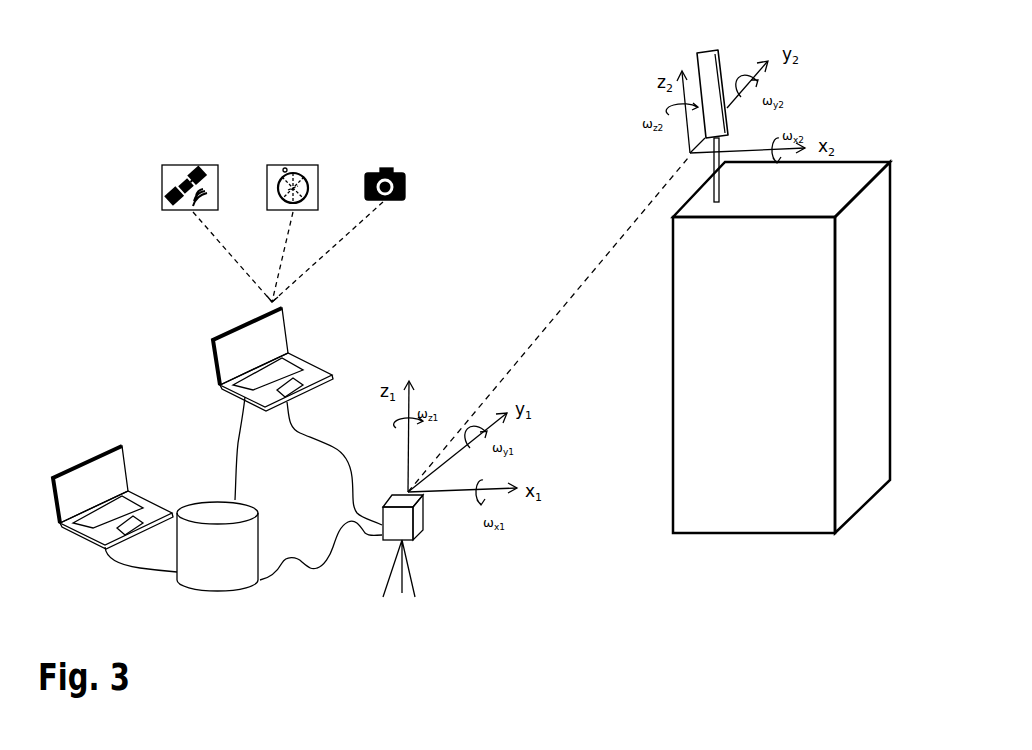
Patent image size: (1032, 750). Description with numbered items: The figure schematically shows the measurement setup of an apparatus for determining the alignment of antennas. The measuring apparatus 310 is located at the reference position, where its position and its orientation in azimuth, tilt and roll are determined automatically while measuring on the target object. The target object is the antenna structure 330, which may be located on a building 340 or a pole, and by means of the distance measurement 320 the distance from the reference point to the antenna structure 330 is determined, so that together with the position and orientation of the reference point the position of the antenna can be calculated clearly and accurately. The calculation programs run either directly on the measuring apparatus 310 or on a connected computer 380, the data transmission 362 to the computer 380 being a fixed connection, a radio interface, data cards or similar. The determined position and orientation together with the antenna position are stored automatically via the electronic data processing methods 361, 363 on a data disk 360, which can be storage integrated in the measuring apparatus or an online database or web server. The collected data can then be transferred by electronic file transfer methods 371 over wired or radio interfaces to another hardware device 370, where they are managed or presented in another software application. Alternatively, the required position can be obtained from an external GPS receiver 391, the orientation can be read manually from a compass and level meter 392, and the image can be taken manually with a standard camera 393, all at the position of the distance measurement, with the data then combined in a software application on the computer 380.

The measuring apparatus 310 is at (405, 525).
The distance measurement 320 is at (600, 270).
The target object / antenna structure 330 is at (715, 58).
The building 340 is at (875, 398).
The data disk 360 is at (227, 583).
The electronic data processing method 361 is at (237, 463).
The data transmission 362 is at (335, 445).
The data transmission 363 is at (327, 568).
The hardware device 370 is at (78, 483).
The electronic file transfer method 371 is at (128, 565).
The computer 380 is at (312, 372).
The GPS receiver 391 is at (213, 172).
The compass and level meter 392 is at (310, 168).
The standard camera 393 is at (398, 168).